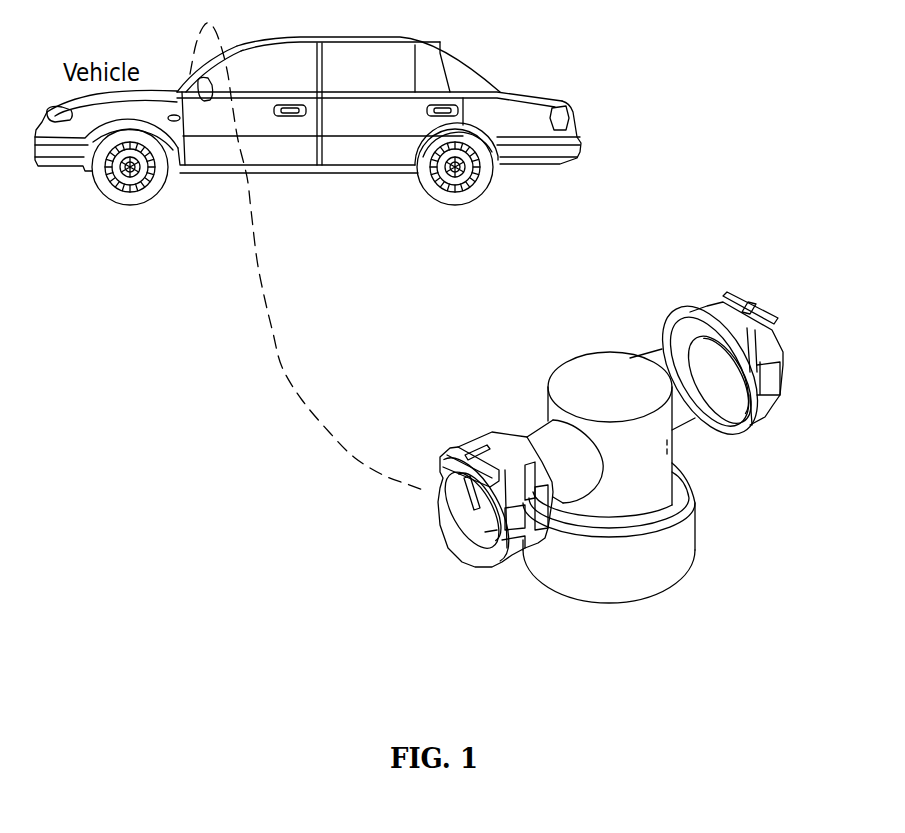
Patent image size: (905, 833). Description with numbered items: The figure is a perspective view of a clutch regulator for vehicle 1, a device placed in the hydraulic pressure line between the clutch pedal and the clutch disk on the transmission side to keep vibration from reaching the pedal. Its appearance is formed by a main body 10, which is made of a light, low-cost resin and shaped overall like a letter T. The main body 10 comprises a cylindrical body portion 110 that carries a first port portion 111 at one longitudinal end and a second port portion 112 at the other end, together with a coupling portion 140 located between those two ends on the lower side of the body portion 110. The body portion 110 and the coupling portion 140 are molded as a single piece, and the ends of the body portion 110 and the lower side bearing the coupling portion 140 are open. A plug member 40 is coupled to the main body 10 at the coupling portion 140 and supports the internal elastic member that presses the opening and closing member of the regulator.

The clutch regulator for vehicle 1 is at (484, 292).
The main body 10 is at (600, 345).
The plug member 40 is at (679, 591).
The body portion 110 is at (680, 420).
The first port portion 111 is at (472, 548).
The second port portion 112 is at (777, 381).
The coupling portion 140 is at (660, 488).